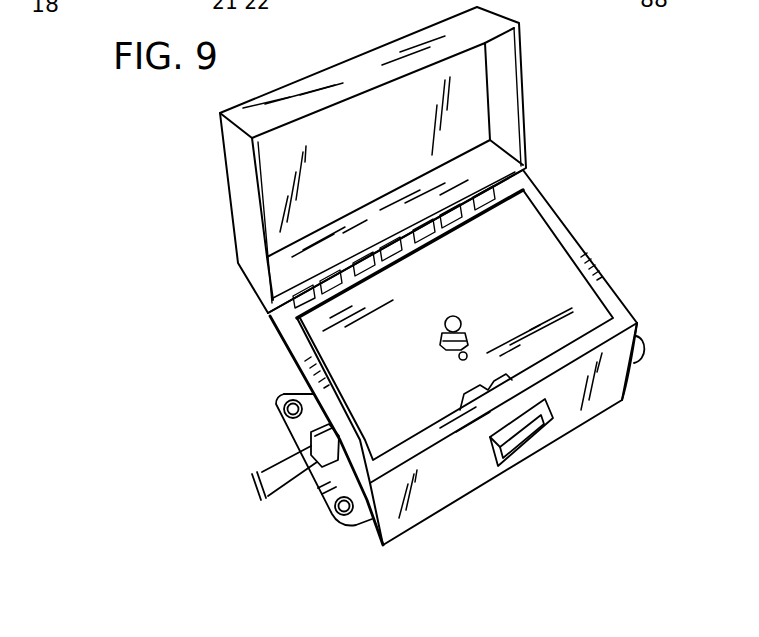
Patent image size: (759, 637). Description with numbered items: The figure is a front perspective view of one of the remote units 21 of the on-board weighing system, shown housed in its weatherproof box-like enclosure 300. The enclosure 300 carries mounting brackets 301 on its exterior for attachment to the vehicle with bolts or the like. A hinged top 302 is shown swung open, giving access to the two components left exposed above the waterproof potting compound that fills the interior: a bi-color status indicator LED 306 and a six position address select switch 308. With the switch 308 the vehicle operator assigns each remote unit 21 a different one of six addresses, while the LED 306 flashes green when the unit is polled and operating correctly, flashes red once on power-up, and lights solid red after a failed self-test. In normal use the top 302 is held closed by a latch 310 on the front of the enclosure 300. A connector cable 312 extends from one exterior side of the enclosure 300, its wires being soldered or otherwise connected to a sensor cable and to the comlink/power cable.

The remote unit 21 is at (580, 214).
The enclosure 300 is at (288, 376).
The mounting bracket 301 is at (642, 348).
The hinged top 302 is at (226, 190).
The status indicator LED 306 is at (470, 352).
The address select switch 308 is at (456, 316).
The latch 310 is at (527, 437).
The connector cable 312 is at (262, 458).